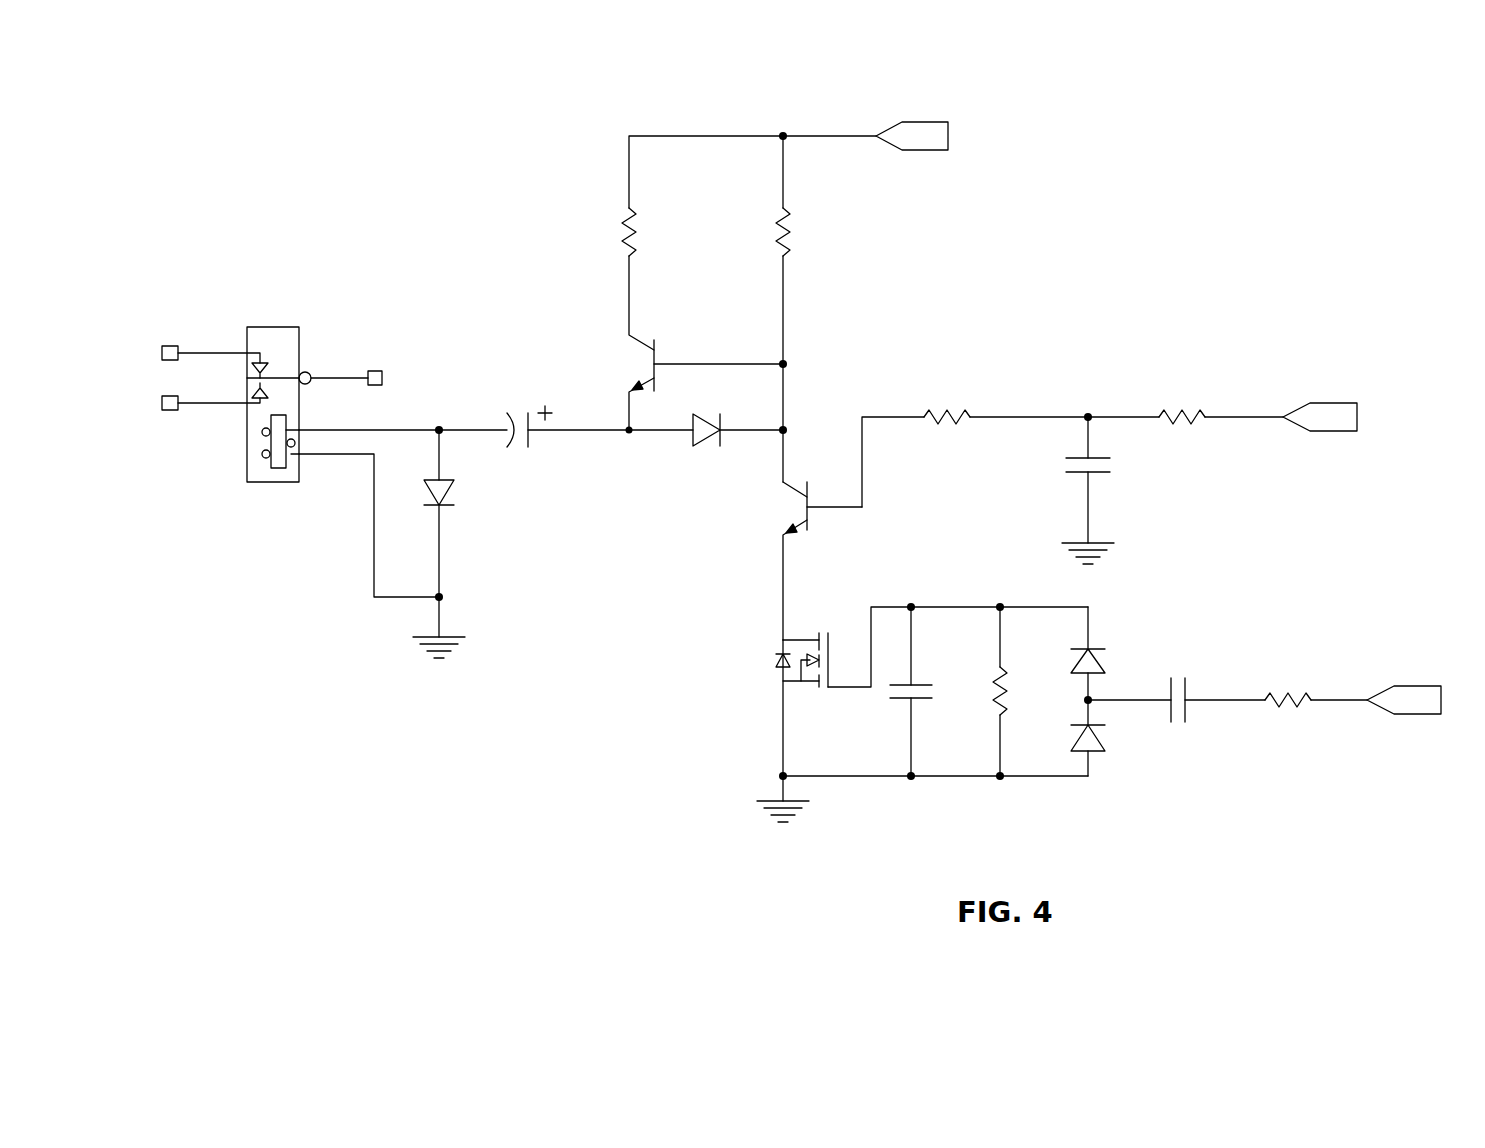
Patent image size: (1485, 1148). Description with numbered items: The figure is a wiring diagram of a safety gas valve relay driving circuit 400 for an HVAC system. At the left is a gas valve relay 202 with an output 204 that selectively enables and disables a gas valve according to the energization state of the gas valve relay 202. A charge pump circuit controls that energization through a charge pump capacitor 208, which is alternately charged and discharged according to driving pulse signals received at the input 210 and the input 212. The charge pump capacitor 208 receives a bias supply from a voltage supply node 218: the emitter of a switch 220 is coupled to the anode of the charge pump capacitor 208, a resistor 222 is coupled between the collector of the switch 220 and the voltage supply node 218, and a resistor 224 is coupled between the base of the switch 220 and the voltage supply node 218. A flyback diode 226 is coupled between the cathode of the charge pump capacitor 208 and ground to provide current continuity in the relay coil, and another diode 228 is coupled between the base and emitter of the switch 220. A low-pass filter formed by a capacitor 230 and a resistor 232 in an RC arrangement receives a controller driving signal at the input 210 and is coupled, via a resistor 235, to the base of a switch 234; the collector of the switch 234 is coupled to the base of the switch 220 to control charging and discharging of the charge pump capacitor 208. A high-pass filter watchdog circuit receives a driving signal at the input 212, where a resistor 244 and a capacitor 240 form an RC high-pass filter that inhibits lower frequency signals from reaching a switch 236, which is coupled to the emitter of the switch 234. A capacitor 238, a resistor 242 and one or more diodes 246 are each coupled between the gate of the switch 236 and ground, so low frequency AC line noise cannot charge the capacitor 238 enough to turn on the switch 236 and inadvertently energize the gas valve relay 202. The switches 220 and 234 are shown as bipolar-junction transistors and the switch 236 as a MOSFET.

The safety gas valve relay driving circuit 400 is at (303, 117).
The gas valve relay 202 is at (299, 324).
The output 204 is at (168, 345).
The charge pump capacitor 208 is at (534, 406).
The input 210 is at (1351, 466).
The input 212 is at (1440, 758).
The voltage supply node 218 is at (950, 188).
The switch 220 is at (626, 382).
The resistor 222 is at (693, 244).
The resistor 224 is at (847, 244).
The flyback diode 226 is at (511, 524).
The diode 228 is at (708, 489).
The capacitor 230 is at (1170, 481).
The resistor 232 is at (1205, 398).
The switch 234 is at (776, 525).
The resistor 235 is at (971, 398).
The switch 236 is at (764, 676).
The capacitor 238 is at (977, 671).
The capacitor 240 is at (1201, 671).
The resistor 242 is at (1066, 646).
The resistor 244 is at (1311, 669).
The diode 246 is at (1162, 758).